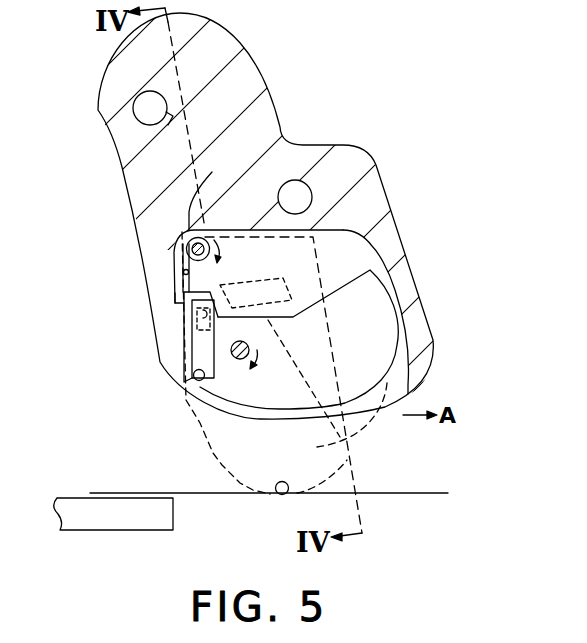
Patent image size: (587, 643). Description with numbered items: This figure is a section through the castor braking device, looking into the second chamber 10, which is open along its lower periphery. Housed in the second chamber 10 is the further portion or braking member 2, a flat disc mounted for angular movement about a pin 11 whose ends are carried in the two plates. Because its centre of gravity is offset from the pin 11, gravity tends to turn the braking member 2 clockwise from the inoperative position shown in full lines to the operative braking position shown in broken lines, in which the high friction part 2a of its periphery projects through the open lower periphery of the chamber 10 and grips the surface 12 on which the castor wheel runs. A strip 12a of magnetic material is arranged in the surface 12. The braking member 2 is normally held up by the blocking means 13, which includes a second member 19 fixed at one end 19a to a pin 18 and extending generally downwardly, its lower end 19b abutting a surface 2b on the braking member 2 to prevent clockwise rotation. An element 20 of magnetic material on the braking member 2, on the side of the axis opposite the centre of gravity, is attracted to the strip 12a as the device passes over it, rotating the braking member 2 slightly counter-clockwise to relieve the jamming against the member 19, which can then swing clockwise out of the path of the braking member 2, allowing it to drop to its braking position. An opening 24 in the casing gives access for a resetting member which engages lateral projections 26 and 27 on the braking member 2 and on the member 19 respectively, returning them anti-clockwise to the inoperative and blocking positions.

The further portion or braking member 2 is at (380, 351).
The part of the periphery 2a is at (282, 495).
The surface on the further portion 2b is at (210, 281).
The second chamber 10 is at (375, 402).
The pin 11 is at (238, 359).
The surface 12 is at (418, 493).
The strip of magnetic material 12a is at (122, 520).
The blocking means 13 is at (160, 241).
The pin 18 is at (300, 146).
The second member 19 is at (182, 256).
The end of the member 19a is at (250, 133).
The lower end 19b is at (176, 293).
The element of magnetic material 20 is at (190, 348).
The opening 24 is at (147, 108).
The lateral projection 26 is at (196, 379).
The lateral projection 27 is at (176, 278).